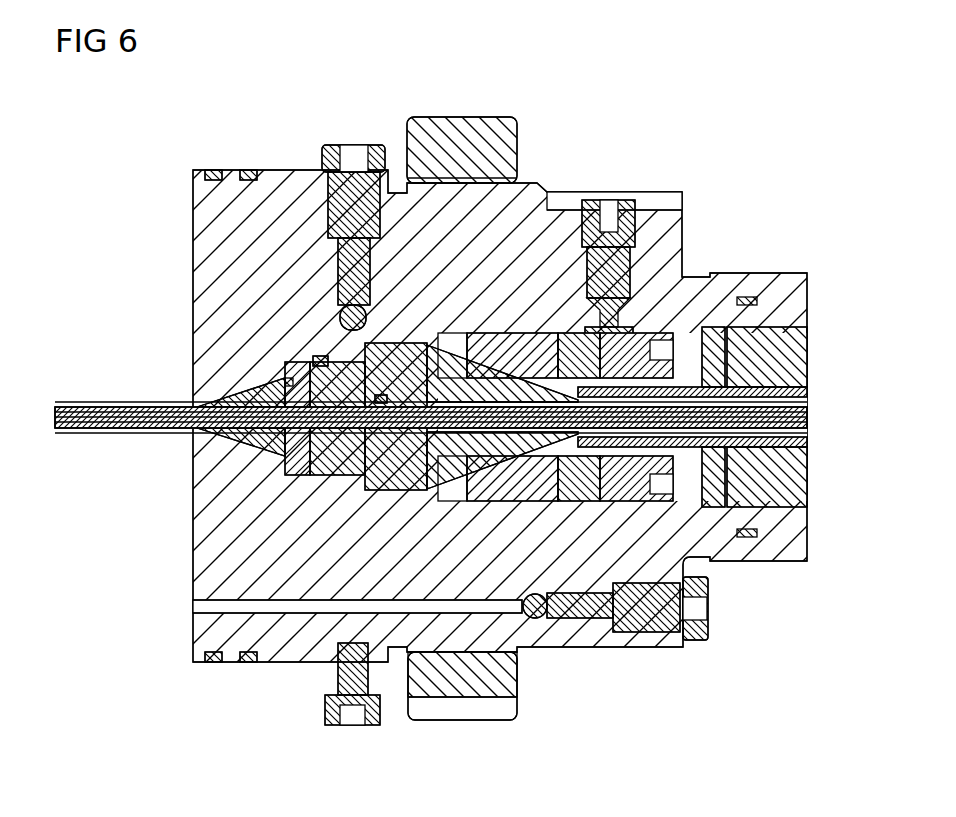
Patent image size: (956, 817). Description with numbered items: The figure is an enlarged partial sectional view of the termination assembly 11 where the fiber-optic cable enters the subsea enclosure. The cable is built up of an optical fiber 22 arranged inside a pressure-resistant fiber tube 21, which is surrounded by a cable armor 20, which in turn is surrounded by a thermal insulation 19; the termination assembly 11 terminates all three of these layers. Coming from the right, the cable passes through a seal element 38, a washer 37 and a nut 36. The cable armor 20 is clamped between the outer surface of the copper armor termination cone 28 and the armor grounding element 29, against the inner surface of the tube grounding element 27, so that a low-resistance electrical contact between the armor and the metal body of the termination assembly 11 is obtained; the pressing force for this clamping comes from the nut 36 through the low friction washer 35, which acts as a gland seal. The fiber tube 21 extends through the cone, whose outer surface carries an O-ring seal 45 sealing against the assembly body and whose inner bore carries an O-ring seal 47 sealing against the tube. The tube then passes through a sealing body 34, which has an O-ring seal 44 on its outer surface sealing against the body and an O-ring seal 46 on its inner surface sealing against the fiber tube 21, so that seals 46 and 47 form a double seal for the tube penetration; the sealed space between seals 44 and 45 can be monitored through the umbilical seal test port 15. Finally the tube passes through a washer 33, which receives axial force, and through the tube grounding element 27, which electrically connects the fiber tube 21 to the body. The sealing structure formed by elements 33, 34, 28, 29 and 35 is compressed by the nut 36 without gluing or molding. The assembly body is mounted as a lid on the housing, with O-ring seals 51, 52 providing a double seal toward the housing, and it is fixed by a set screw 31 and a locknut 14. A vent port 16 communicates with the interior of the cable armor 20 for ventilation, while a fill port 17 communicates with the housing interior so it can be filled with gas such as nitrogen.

The termination assembly 11 is at (612, 97).
The locknut 14 is at (517, 688).
The umbilical seal test port 15 is at (372, 145).
The vent port 16 is at (612, 200).
The fill port 17 is at (710, 622).
The thermal insulation 19 is at (812, 394).
The cable armor 20 is at (510, 375).
The fiber tube 21 is at (180, 407).
The optical fiber 22 is at (130, 407).
The tube grounding element 27 is at (256, 440).
The armor termination cone 28 is at (424, 492).
The armor grounding element 29 is at (460, 333).
The set screw 31 is at (340, 728).
The washer 33 is at (298, 478).
The sealing body 34 is at (320, 356).
The low friction washer 35 is at (584, 503).
The nut 36 is at (640, 503).
The washer 37 is at (712, 505).
The seal element 38 is at (792, 480).
The O-ring seal 44 is at (334, 478).
The O-ring seal 45 is at (394, 492).
The O-ring seal 46 is at (290, 380).
The O-ring seal 47 is at (387, 397).
The O-ring seal 51 is at (213, 665).
The O-ring seal 52 is at (248, 665).